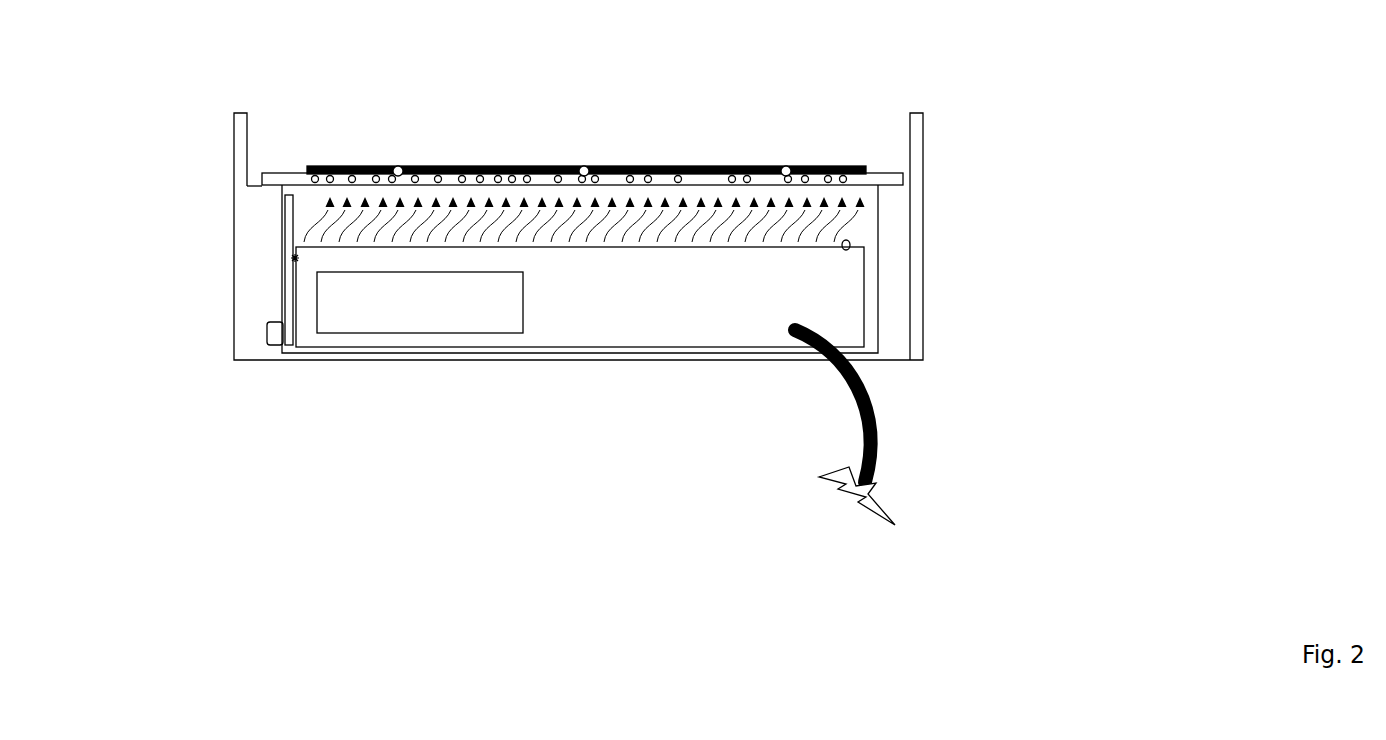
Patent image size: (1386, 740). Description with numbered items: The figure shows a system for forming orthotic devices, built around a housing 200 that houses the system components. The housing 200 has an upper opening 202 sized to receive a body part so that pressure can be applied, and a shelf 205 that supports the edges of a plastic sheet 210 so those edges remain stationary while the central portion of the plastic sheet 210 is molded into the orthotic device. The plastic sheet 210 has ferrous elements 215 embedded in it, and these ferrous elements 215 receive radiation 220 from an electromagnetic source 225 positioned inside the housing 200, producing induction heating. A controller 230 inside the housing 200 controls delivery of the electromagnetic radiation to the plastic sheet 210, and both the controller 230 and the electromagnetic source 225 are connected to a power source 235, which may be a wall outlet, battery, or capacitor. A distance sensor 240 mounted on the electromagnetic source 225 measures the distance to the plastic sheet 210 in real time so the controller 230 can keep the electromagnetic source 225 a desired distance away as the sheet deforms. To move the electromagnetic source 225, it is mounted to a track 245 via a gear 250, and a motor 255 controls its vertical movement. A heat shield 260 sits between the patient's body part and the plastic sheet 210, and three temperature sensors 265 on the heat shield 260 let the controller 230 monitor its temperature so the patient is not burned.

The housing 200 is at (907, 355).
The upper opening 202 is at (370, 123).
The shelf 205 is at (903, 186).
The plastic sheet 210 is at (878, 180).
The ferrous elements 215 is at (303, 186).
The radiation 220 is at (837, 223).
The electromagnetic source 225 is at (653, 332).
The controller 230 is at (420, 302).
The power source 235 is at (820, 478).
The distance sensor 240 is at (849, 250).
The track 245 is at (287, 215).
The gear 250 is at (294, 258).
The motor 255 is at (272, 333).
The heat shield 260 is at (317, 165).
The temperature sensors 265 is at (400, 169).